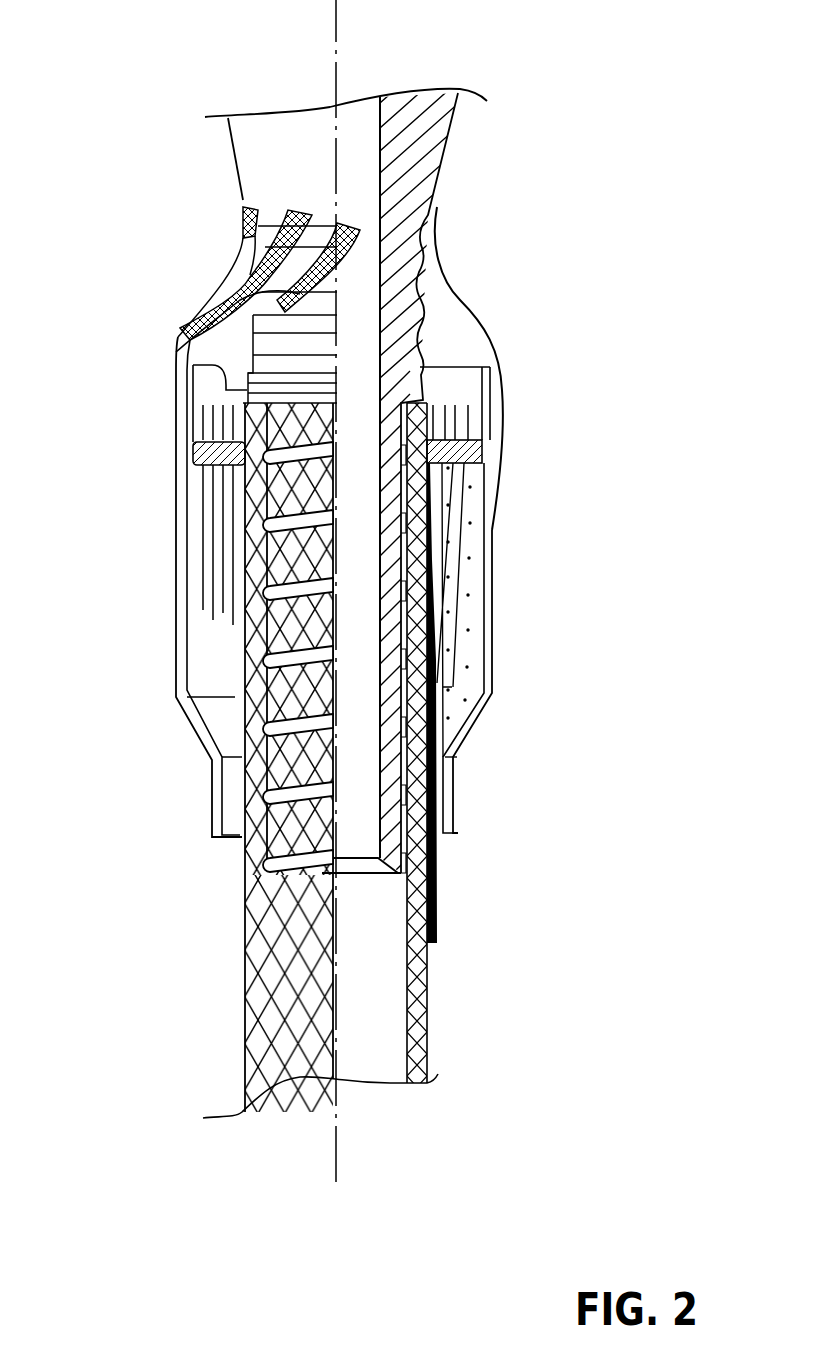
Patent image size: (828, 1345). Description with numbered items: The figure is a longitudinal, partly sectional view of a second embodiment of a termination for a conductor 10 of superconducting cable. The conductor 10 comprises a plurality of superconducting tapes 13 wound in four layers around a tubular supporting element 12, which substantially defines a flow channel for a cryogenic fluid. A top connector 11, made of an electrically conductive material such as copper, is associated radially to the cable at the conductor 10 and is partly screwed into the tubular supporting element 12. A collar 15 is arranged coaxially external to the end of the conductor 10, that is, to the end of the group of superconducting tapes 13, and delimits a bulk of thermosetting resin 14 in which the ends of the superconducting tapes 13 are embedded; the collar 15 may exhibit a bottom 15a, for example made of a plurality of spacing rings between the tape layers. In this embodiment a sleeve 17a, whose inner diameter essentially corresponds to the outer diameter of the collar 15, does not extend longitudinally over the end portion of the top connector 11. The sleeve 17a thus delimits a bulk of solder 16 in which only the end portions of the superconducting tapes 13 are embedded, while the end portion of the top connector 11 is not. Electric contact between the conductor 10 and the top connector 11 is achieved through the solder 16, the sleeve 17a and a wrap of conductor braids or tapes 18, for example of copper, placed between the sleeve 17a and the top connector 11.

The conductor 10 is at (433, 943).
The top connector 11 is at (303, 137).
The tubular supporting element 12 is at (418, 1037).
The superconducting tapes 13 is at (177, 358).
The thermosetting resin 14 is at (450, 383).
The collar 15 is at (195, 413).
The bottom 15a is at (482, 453).
The solder 16 is at (460, 690).
The sleeve 17a is at (492, 598).
The wrap of conductor braids or tapes 18 is at (457, 295).